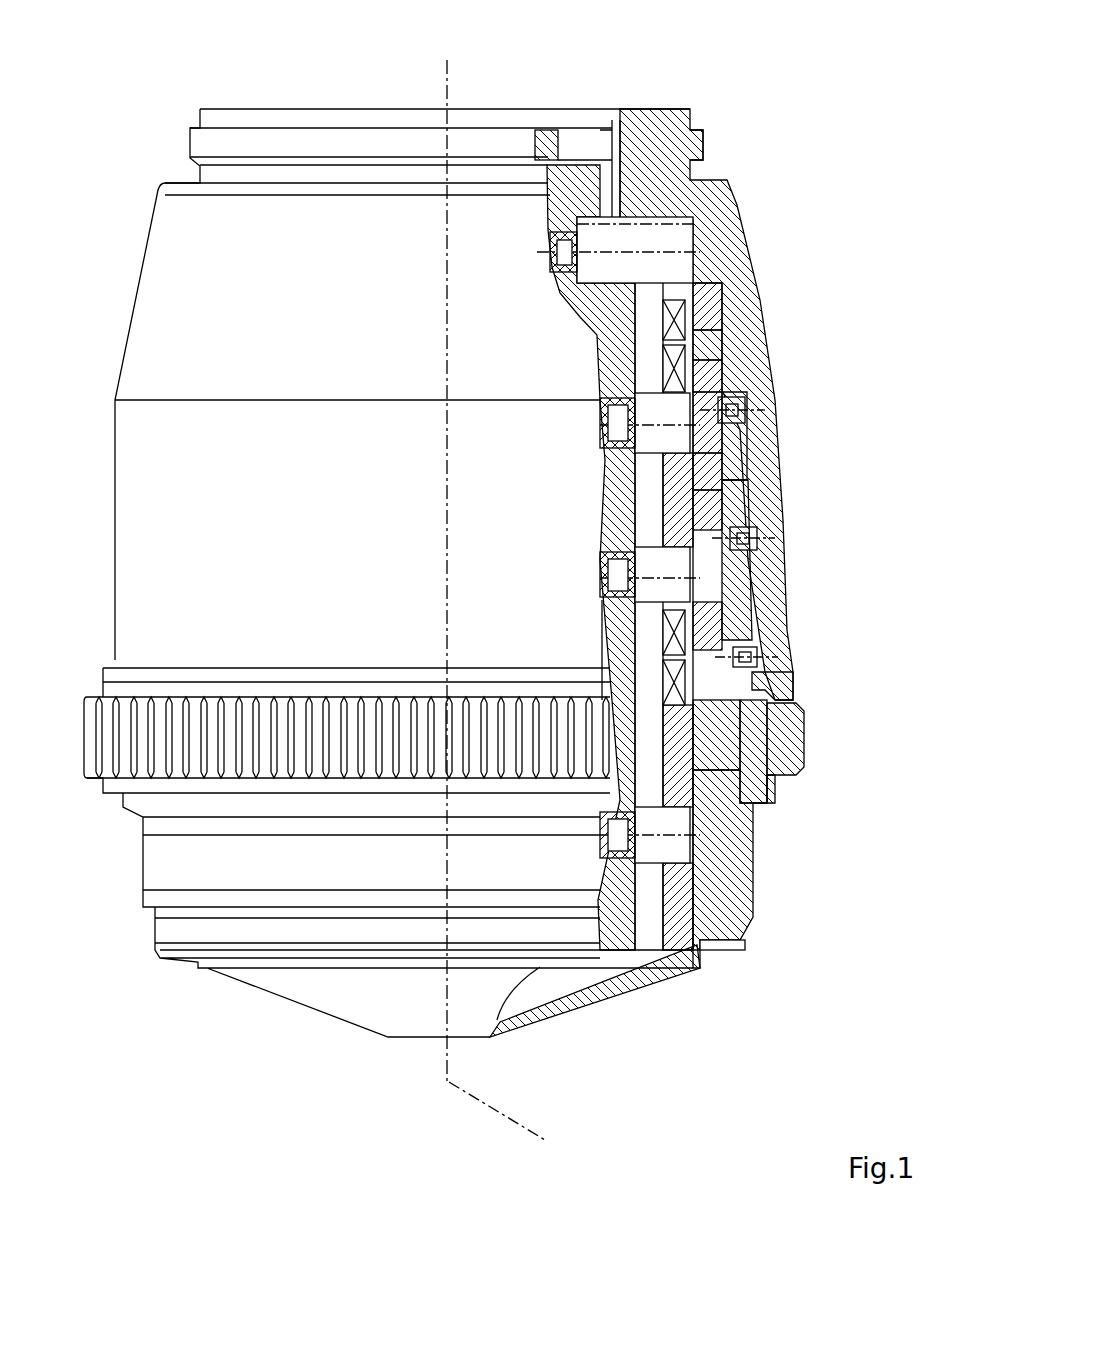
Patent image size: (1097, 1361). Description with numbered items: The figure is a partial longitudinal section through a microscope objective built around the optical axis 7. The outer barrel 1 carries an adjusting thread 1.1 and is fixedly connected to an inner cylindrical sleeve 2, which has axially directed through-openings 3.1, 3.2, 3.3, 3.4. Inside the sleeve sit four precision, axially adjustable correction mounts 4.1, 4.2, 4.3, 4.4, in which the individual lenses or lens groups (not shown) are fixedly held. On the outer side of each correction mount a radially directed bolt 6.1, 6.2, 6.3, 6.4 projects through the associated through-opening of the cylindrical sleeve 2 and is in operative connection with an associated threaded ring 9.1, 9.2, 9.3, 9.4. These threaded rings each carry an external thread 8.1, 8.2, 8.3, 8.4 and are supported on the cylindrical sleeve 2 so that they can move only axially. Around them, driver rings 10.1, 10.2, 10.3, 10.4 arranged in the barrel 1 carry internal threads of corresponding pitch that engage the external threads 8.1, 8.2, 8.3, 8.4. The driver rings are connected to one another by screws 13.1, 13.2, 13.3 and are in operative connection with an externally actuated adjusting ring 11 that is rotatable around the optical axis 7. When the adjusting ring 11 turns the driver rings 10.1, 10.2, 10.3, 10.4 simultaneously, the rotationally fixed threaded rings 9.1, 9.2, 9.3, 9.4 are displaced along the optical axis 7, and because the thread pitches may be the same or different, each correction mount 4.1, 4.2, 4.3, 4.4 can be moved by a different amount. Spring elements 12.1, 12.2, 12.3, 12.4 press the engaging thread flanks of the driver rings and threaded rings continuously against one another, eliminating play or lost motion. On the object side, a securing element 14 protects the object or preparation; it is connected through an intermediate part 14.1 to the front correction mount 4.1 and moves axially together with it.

The barrel 1 is at (668, 143).
The adjusting thread 1.1 is at (703, 137).
The inner cylindrical sleeve 2 is at (675, 912).
The through-opening 3.1 is at (645, 848).
The through-opening 3.2 is at (647, 613).
The through-opening 3.3 is at (647, 460).
The through-opening 3.4 is at (660, 215).
The correction mount 4.1 is at (660, 980).
The correction mount 4.2 is at (620, 647).
The correction mount 4.3 is at (613, 500).
The correction mount 4.4 is at (552, 150).
The bolt 6.1 is at (685, 848).
The bolt 6.2 is at (647, 562).
The bolt 6.3 is at (650, 413).
The bolt 6.4 is at (587, 268).
The optical axis 7 is at (510, 1124).
The external thread 8.1 is at (770, 745).
The external thread 8.2 is at (705, 630).
The external thread 8.3 is at (700, 490).
The external thread 8.4 is at (700, 318).
The threaded ring 9.1 is at (760, 762).
The threaded ring 9.2 is at (730, 600).
The threaded ring 9.3 is at (725, 460).
The threaded ring 9.4 is at (715, 290).
The driver ring 10.1 is at (745, 705).
The driver ring 10.2 is at (750, 560).
The driver ring 10.3 is at (738, 430).
The driver ring 10.4 is at (705, 352).
The adjusting ring 11 is at (770, 690).
The spring element 12.1 is at (663, 687).
The spring element 12.2 is at (640, 635).
The spring element 12.3 is at (663, 370).
The spring element 12.4 is at (662, 323).
The screw 13.1 is at (747, 658).
The screw 13.2 is at (745, 538).
The screw 13.3 is at (738, 410).
The securing element 14 is at (590, 1010).
The intermediate part 14.1 is at (735, 948).